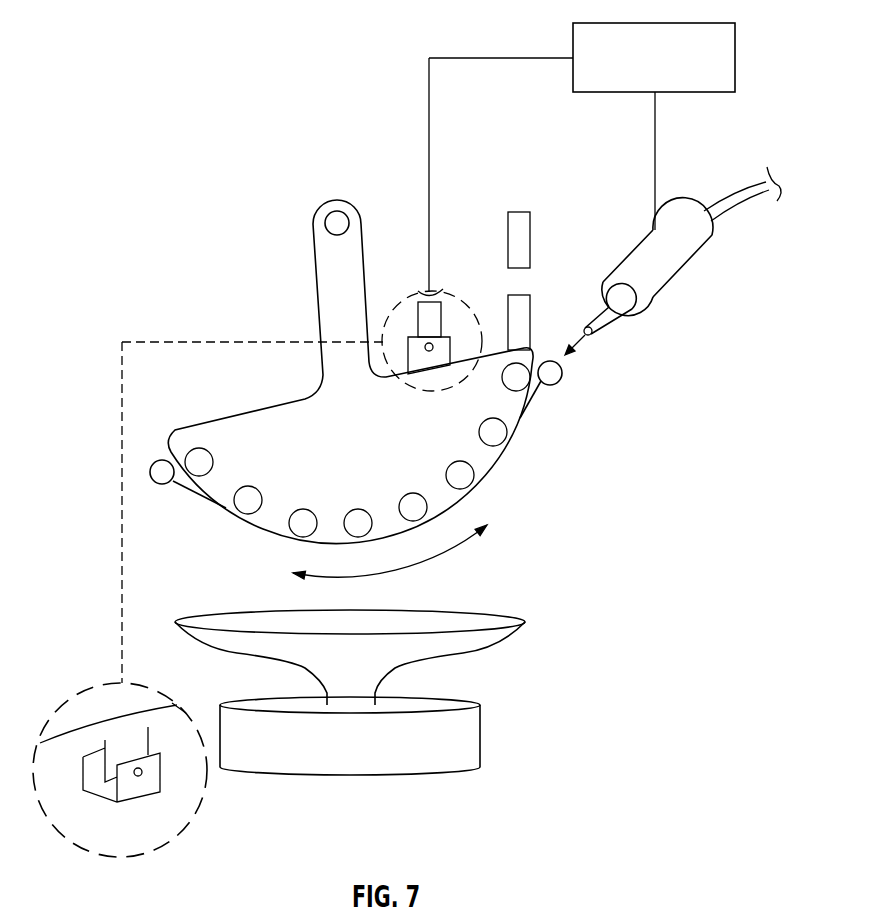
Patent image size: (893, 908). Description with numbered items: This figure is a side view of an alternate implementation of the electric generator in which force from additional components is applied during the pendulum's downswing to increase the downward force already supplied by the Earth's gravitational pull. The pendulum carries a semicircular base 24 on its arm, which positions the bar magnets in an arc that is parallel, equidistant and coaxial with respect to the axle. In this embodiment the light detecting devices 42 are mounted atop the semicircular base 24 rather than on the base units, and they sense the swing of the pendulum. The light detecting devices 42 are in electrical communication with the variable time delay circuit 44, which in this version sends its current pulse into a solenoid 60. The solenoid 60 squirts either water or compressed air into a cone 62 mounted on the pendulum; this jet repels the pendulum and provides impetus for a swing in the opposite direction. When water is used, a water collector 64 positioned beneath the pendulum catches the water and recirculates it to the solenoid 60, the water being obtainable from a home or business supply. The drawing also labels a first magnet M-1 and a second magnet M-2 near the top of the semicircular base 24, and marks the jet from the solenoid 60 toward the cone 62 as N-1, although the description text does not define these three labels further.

The semicircular base 24 is at (359, 448).
The light detecting devices 42 is at (437, 298).
The variable time delay circuit 44 is at (720, 22).
The solenoid 60 is at (698, 248).
The cone 62 is at (188, 483).
The water collector 64 is at (453, 618).
The first magnet M-1 is at (530, 233).
The second magnet M-2 is at (530, 308).
The nozzle stream N-1 is at (608, 313).